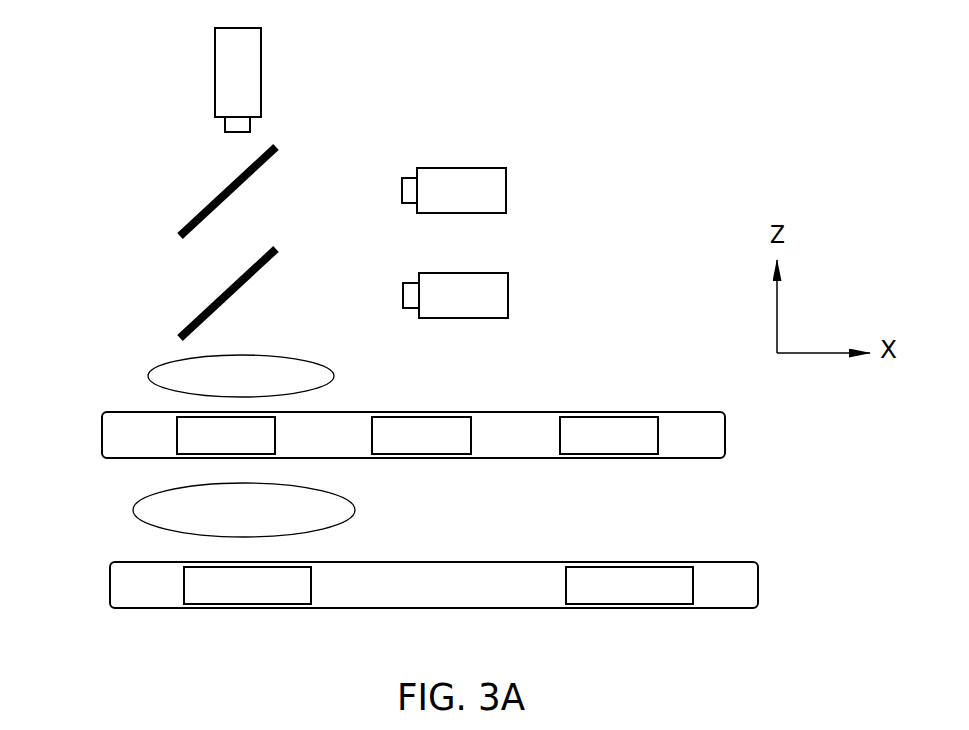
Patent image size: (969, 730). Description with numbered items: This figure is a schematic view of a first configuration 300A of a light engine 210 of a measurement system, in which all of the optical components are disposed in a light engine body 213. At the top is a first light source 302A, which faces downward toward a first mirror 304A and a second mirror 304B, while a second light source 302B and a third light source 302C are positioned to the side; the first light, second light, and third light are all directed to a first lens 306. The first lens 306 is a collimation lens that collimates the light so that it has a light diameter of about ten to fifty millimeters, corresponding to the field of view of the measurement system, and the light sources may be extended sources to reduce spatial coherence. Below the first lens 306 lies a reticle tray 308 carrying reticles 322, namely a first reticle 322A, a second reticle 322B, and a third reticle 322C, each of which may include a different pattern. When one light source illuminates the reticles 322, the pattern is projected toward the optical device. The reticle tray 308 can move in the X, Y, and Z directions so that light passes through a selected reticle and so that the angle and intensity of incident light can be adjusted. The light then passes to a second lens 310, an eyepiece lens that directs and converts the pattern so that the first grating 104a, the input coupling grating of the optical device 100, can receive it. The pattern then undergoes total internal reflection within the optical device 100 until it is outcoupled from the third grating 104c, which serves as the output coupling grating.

The first configuration 300A is at (80, 228).
The light engine 210 is at (712, 90).
The light engine body 213 is at (736, 166).
The first light source 302A is at (261, 72).
The second light source 302B is at (506, 192).
The third light source 302C is at (508, 297).
The first mirror 304A is at (230, 195).
The second mirror 304B is at (230, 297).
The first lens 306 is at (152, 368).
The reticle tray 308 is at (725, 432).
The reticles 322 is at (118, 440).
The first reticle 322A is at (197, 438).
The second reticle 322B is at (437, 430).
The third reticle 322C is at (613, 437).
The second lens 310 is at (355, 510).
The optical device 100 is at (758, 583).
The first grating 104a is at (240, 587).
The third grating 104c is at (624, 587).